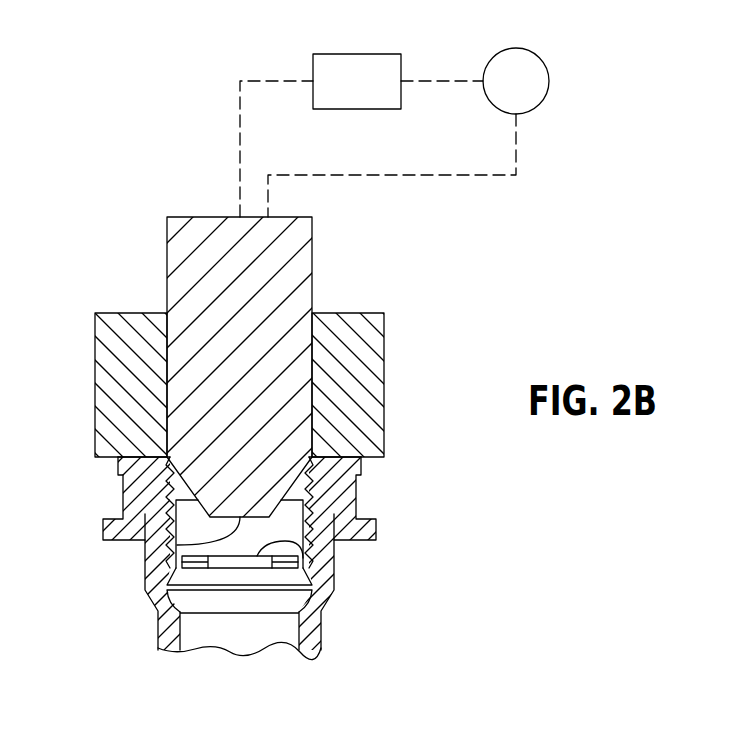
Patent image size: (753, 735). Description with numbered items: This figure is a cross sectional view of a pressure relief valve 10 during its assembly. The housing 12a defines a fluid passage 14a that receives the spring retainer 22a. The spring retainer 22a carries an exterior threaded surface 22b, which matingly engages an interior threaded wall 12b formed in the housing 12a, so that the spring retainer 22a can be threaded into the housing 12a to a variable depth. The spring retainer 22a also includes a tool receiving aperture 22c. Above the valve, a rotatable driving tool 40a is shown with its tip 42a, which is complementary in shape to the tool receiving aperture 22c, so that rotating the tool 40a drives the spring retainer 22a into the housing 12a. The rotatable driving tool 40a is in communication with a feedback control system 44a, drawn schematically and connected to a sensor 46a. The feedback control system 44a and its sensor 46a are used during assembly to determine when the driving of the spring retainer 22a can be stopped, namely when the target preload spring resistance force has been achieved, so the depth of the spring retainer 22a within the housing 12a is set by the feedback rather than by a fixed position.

The sensor assembly 10 is at (446, 470).
The housing 12a is at (310, 634).
The interior threaded wall 12b is at (308, 505).
The fluid passage 14a is at (198, 632).
The spring retainer 22a is at (300, 549).
The exterior threaded surface 22b is at (303, 551).
The tool receiving aperture 22c is at (172, 484).
The rotatable driving tool 40a is at (293, 255).
The tip 42a is at (180, 547).
The feedback control system 44a is at (357, 54).
The sensor 46a is at (549, 80).